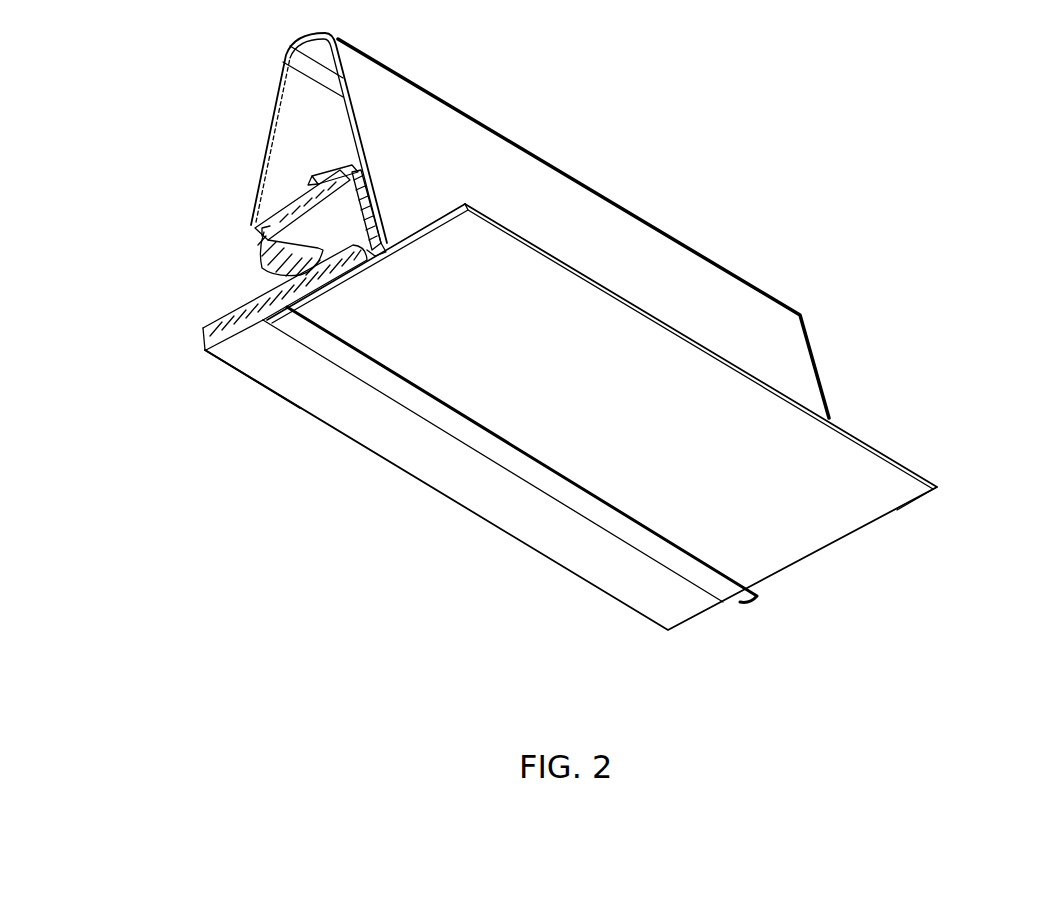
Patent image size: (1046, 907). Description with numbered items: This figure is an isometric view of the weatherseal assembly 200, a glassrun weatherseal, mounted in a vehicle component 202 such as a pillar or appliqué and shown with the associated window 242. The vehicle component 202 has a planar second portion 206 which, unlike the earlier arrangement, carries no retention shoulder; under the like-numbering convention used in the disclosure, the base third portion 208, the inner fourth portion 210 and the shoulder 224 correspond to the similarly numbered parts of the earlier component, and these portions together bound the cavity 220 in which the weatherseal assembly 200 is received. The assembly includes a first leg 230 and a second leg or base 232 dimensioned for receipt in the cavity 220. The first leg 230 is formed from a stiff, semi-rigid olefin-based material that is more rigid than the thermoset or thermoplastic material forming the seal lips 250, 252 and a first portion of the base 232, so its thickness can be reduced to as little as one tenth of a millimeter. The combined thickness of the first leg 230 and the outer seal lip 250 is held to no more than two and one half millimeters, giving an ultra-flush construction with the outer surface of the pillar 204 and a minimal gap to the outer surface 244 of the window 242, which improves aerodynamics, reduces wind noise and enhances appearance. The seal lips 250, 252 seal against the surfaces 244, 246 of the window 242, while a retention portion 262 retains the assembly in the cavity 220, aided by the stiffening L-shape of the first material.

The weatherseal assembly 200 is at (175, 273).
The vehicle component 202 is at (655, 439).
The pillar 204 is at (850, 457).
The second portion 206 is at (355, 258).
The rail side wall 208 is at (373, 200).
The rail 210 is at (282, 228).
The cavity 220 is at (340, 172).
The clip upper portion 224 is at (320, 167).
The first leg 230 is at (320, 298).
The second leg or base 232 is at (388, 222).
The window 242 is at (205, 348).
The outer surface of the window 244 is at (265, 380).
The window surface 246 is at (208, 326).
The outer seal lip 250 is at (267, 330).
The seal lip 252 is at (260, 272).
The retention portion 262 is at (367, 170).